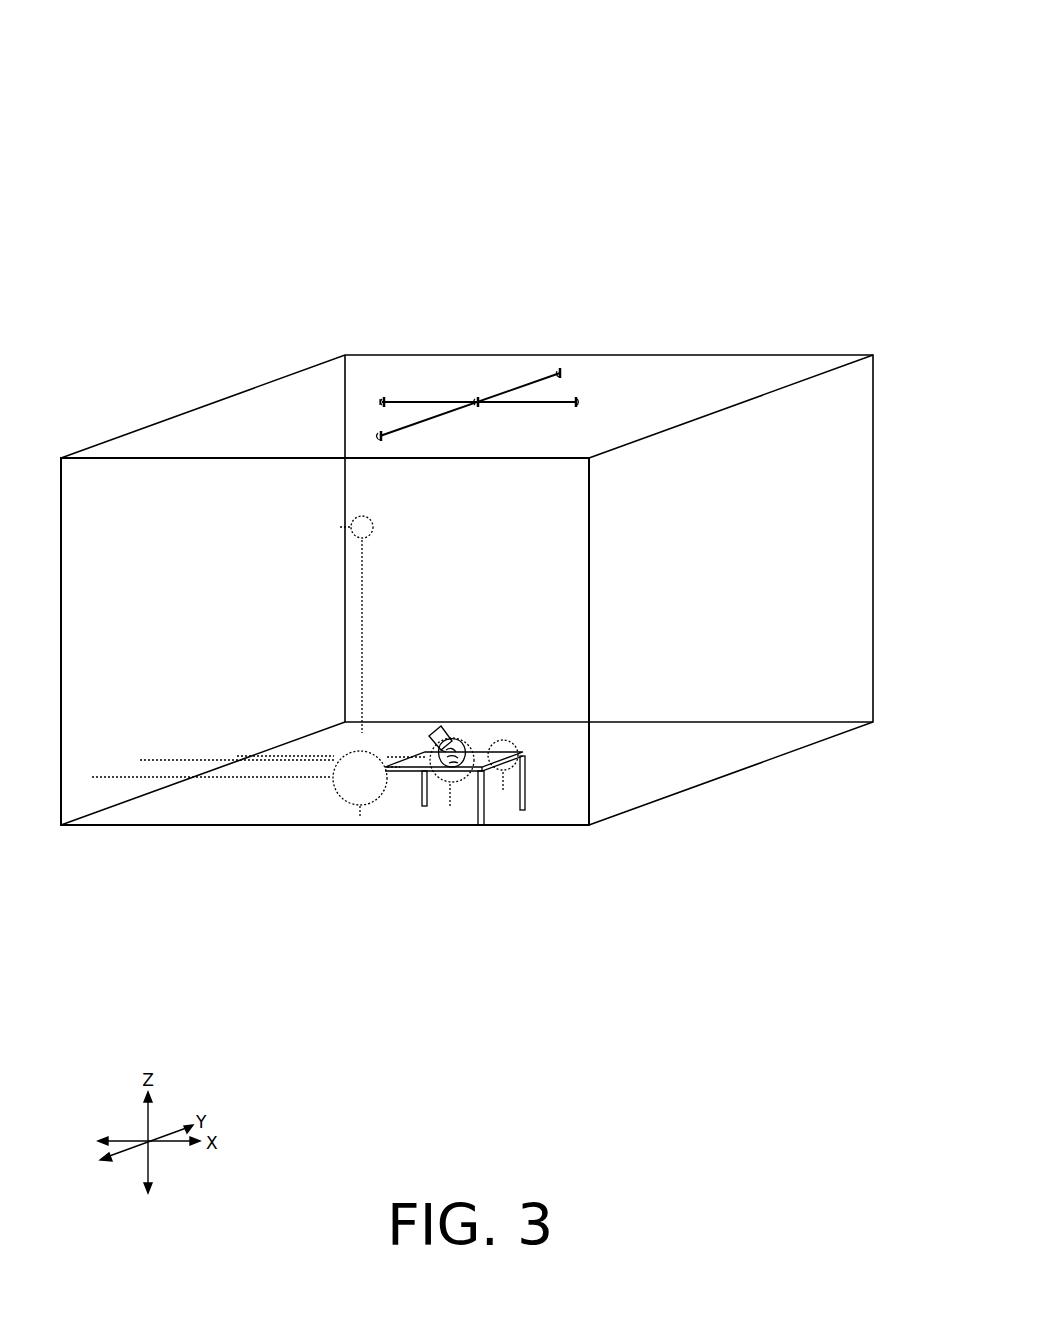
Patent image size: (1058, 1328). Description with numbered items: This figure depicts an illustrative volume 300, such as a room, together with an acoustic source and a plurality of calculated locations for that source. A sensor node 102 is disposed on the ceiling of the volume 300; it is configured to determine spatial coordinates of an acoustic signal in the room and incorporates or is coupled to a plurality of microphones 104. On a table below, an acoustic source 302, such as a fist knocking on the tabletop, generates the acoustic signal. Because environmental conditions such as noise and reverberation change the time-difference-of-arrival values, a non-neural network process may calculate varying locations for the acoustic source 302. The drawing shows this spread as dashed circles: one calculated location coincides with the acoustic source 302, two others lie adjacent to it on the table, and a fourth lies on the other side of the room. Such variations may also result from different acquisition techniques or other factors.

The volume 300 is at (761, 28).
The sensor node 102 is at (491, 332).
The microphones 104 is at (560, 375).
The acoustic source 302 is at (457, 780).